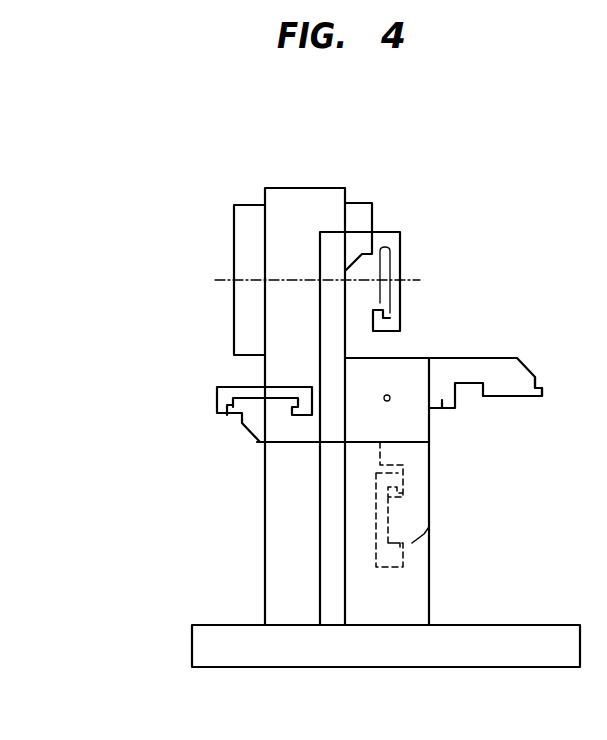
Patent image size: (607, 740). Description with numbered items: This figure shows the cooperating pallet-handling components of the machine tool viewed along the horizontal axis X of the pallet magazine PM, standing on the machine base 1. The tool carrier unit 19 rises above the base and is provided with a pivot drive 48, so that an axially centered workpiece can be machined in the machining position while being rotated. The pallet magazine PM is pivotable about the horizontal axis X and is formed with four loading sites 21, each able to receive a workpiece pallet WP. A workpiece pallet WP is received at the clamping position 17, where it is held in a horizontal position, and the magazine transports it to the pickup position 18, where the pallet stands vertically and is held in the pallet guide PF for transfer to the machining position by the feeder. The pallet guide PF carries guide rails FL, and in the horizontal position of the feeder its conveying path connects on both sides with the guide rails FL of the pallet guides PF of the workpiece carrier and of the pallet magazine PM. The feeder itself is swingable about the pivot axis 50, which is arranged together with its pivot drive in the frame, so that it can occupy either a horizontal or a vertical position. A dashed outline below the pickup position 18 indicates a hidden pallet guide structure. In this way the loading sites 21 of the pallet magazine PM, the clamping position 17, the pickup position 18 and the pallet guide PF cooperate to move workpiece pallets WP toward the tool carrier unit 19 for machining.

The machine base 1 is at (531, 626).
The clamping position 17 is at (223, 387).
The pickup position 18 is at (413, 298).
The tool carrier unit 19 is at (296, 188).
The loading sites 21 is at (520, 397).
The pivot drive 48 is at (233, 215).
The pivot axis 50 is at (221, 279).
The workpiece pallet WP is at (400, 233).
The pallet guide PF is at (390, 250).
The horizontal axis X is at (391, 394).
The guide rails FL is at (540, 392).
The pallet magazine PM is at (442, 406).